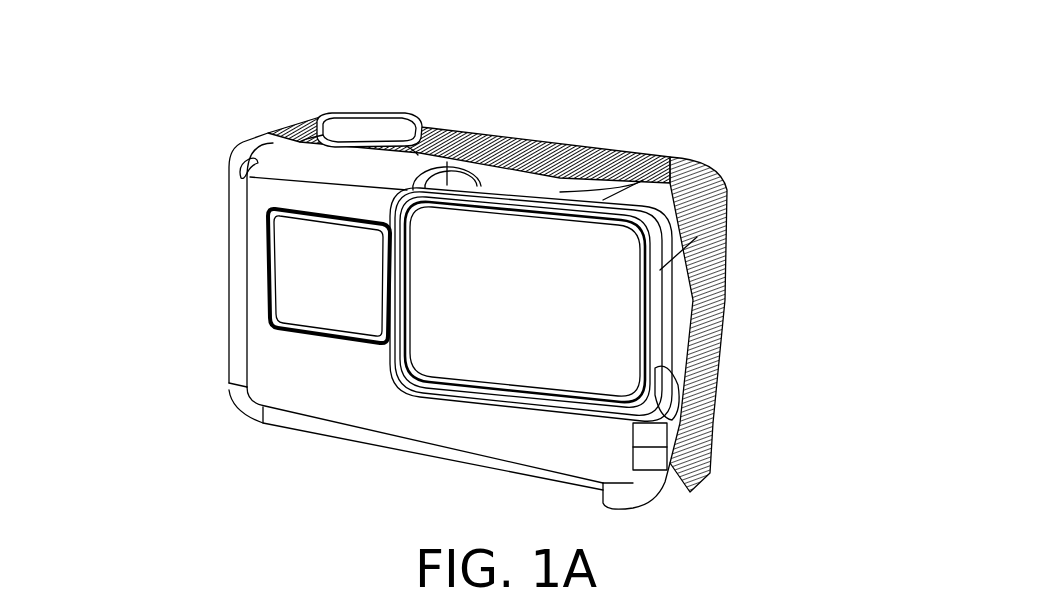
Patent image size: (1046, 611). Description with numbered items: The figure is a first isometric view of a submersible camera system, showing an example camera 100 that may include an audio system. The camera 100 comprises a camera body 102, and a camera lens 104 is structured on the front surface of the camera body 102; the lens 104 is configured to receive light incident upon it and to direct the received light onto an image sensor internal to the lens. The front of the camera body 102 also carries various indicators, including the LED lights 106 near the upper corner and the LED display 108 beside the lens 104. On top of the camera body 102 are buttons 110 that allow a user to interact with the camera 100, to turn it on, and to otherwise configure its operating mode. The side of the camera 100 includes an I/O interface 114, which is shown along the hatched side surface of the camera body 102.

The camera 100 is at (599, 57).
The camera body 102 is at (633, 150).
The camera lens 104 is at (597, 326).
The LED lights 106 is at (241, 160).
The LED display 108 is at (285, 293).
The buttons 110 is at (360, 116).
The I/O interface 114 is at (698, 421).